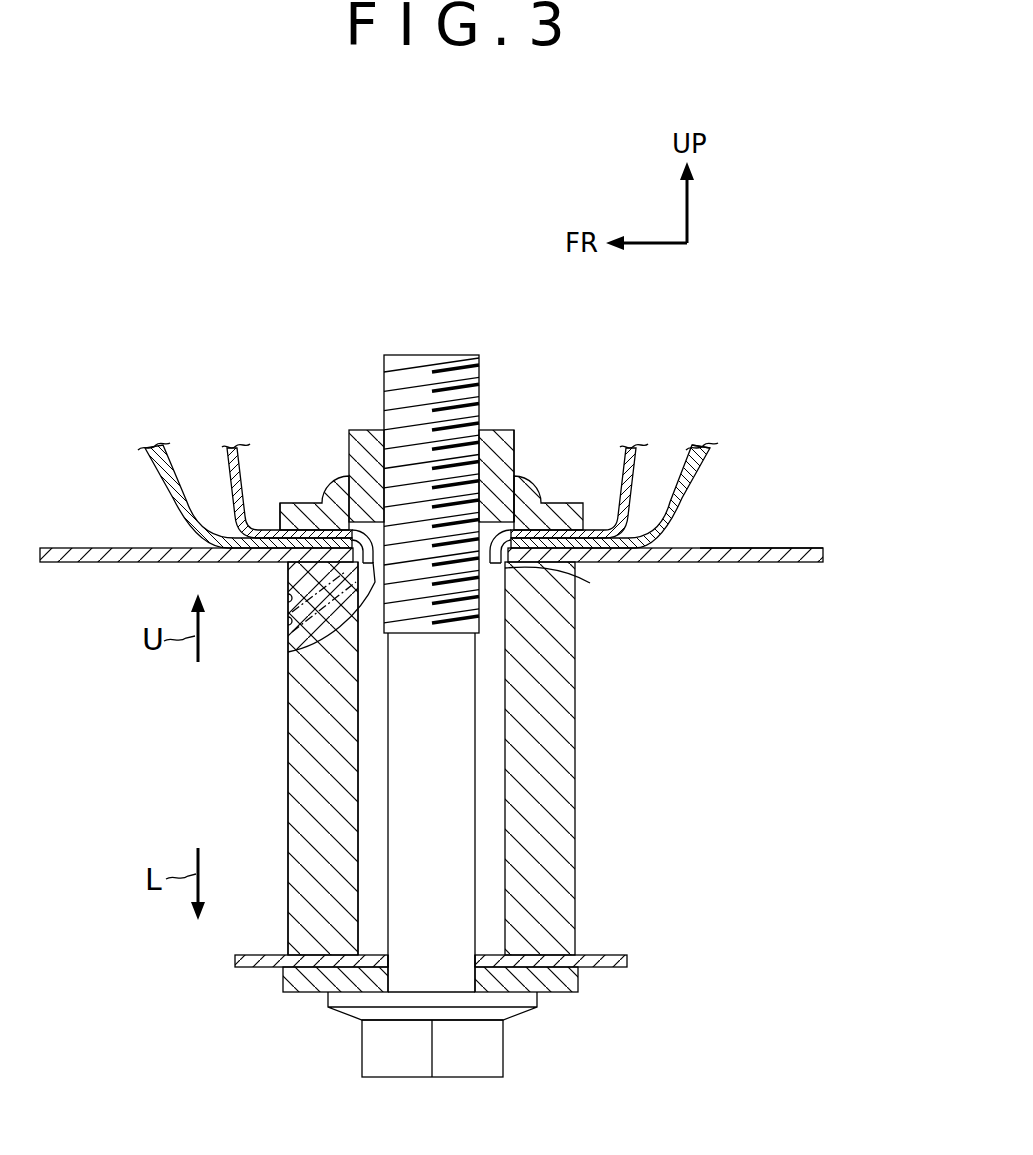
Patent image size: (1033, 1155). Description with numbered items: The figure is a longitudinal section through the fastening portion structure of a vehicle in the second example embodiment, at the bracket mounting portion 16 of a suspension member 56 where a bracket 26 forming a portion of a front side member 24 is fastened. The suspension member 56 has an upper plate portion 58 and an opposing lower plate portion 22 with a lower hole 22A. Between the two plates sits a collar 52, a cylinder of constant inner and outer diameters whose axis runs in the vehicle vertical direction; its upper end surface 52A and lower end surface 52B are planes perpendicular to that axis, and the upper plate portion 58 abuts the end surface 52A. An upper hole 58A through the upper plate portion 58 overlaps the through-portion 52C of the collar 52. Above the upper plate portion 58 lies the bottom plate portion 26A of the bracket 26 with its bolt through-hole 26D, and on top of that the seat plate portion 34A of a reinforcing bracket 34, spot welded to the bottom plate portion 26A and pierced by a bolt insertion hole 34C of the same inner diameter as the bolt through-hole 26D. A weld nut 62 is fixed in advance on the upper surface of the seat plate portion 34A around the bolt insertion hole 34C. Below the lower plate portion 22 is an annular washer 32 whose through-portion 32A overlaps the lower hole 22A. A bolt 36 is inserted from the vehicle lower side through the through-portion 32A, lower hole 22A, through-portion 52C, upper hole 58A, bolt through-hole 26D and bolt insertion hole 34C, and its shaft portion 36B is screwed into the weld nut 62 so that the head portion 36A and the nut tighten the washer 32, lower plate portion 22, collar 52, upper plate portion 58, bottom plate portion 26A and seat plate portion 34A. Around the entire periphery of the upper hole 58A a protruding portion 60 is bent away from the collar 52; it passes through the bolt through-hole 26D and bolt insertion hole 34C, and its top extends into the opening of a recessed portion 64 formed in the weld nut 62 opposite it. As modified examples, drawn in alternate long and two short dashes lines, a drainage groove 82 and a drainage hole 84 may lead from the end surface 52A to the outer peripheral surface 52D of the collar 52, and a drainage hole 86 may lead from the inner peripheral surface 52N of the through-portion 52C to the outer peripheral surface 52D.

The bracket mounting portion 16 is at (261, 351).
The lower plate portion 22 is at (615, 952).
The lower hole 22A is at (385, 958).
The front side member 24 is at (737, 454).
The bracket 26 is at (724, 489).
The bottom plate portion 26A is at (652, 536).
The bolt through-hole 26D is at (350, 484).
The washer 32 is at (319, 1000).
The through-portion 32A is at (393, 988).
The reinforcing bracket 34 is at (644, 458).
The seat plate portion 34A is at (598, 523).
The bolt insertion hole 34C is at (348, 508).
The bolt 36 is at (497, 1099).
The head portion 36A is at (505, 1053).
The shaft portion 36B is at (483, 368).
The collar 52 is at (652, 733).
The end surface 52A is at (284, 515).
The end surface 52B is at (307, 993).
The through-portion 52C is at (360, 740).
The outer peripheral surface 52D is at (287, 762).
The inner peripheral surface 52N is at (358, 666).
The suspension member 56 is at (778, 513).
The upper plate portion 58 is at (766, 572).
The upper hole 58A is at (288, 663).
The protruding portion 60 is at (523, 527).
The weld nut 62 is at (526, 445).
The recessed portion 64 is at (490, 532).
The drainage groove 82 is at (590, 583).
The drainage hole 84 is at (292, 600).
The drainage hole 86 is at (292, 622).